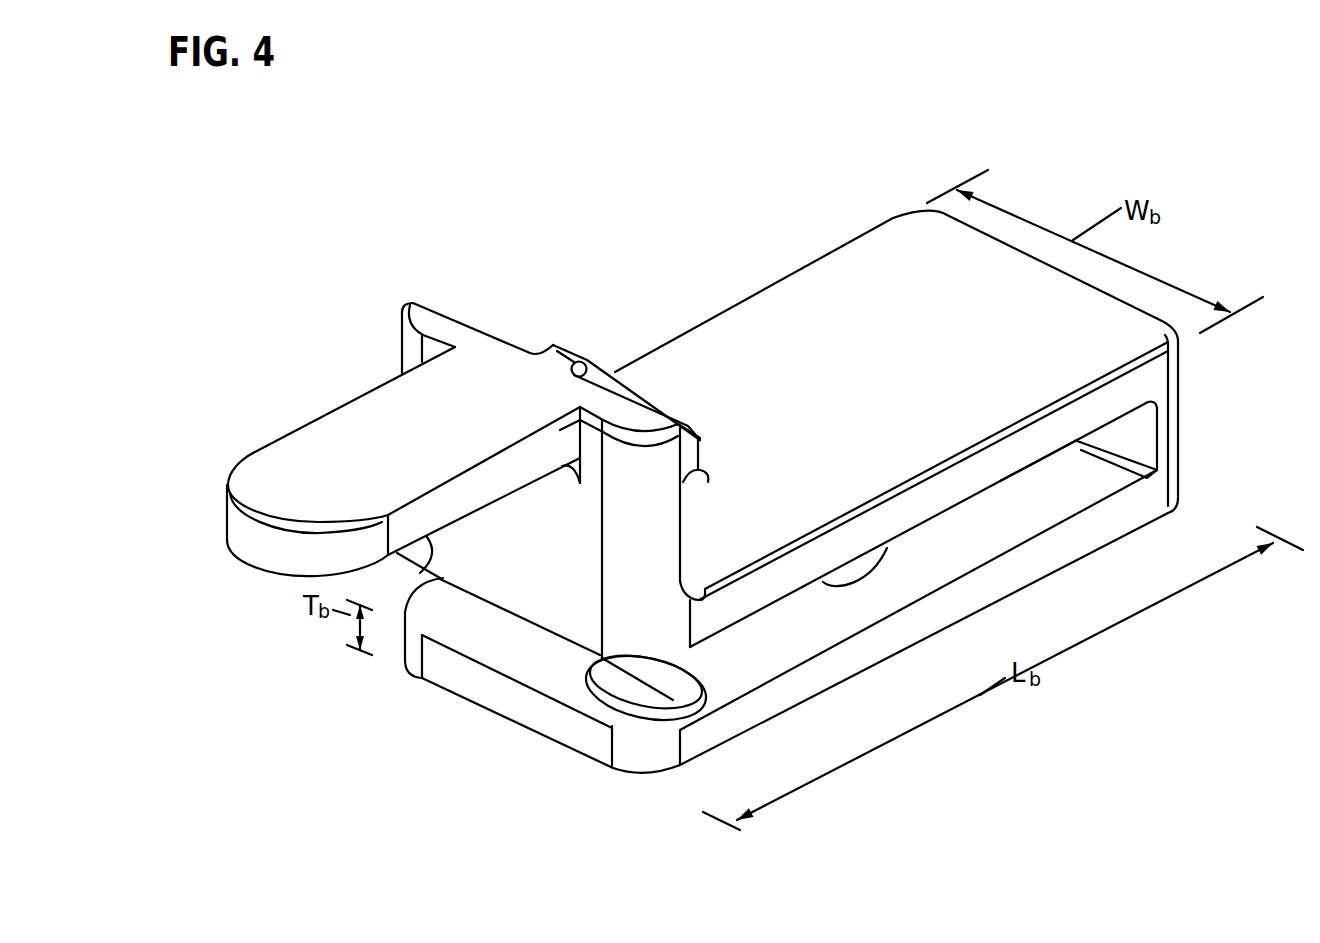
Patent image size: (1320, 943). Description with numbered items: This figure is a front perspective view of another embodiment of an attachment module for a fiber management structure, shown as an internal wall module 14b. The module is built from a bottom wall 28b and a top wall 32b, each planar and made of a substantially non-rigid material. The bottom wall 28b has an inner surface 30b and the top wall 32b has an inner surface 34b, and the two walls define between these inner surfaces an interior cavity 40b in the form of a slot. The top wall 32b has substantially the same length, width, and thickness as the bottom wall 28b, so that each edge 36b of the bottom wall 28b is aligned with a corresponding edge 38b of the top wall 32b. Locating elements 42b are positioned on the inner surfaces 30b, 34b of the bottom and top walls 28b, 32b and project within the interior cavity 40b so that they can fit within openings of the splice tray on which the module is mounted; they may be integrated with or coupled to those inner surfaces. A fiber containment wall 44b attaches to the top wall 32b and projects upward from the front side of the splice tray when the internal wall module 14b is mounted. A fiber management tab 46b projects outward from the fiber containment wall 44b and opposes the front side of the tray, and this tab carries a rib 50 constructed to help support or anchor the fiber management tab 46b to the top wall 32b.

The internal wall module 14b is at (1135, 127).
The bottom wall 28b is at (1120, 518).
The inner surface 30b is at (1115, 483).
The top wall 32b is at (837, 288).
The inner surface 34b is at (1060, 452).
The edge 36b is at (703, 737).
The edge 38b is at (737, 606).
The interior cavity 40b is at (508, 638).
The locating elements 42b is at (860, 570).
The fiber containment wall 44b is at (497, 570).
The fiber management tab 46b is at (313, 465).
The rib 50 is at (603, 362).